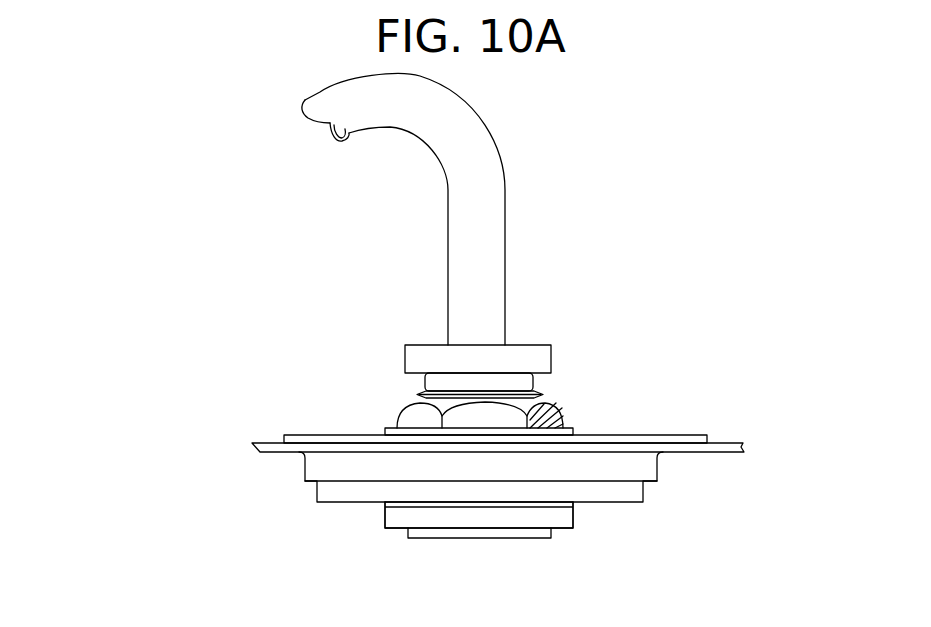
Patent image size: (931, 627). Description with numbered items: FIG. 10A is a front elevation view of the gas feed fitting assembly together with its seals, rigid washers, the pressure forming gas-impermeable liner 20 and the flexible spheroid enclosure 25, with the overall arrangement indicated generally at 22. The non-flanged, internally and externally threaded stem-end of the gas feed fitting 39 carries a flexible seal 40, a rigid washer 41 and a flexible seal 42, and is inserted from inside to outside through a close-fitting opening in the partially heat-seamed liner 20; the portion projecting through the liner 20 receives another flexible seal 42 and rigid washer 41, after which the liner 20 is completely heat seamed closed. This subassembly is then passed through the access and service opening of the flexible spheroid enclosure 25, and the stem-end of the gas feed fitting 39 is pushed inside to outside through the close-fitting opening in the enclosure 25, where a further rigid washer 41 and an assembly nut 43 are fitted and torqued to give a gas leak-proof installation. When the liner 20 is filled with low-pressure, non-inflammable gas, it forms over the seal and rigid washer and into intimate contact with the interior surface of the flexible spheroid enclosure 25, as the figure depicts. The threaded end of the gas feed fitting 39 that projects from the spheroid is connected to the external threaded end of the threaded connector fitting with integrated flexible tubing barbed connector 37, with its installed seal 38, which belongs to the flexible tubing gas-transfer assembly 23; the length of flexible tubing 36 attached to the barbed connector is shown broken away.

The pressure forming gas-impermeable liner 20 is at (720, 441).
The faucet assembly 22 is at (130, 342).
The flexible tubing gas-transfer assembly 23 is at (545, 112).
The flexible spheroid enclosure 25 is at (318, 435).
The flexible tubing 36 is at (320, 90).
The threaded connector fitting with integrated flexible tubing barbed connector 37 is at (552, 347).
The seal 38 is at (423, 385).
The gas feed fitting 39 is at (537, 395).
The flexible seal 40 is at (383, 513).
The rigid washer 41 is at (575, 432).
The flexible seal 42 is at (315, 495).
The assembly nut 43 is at (407, 417).